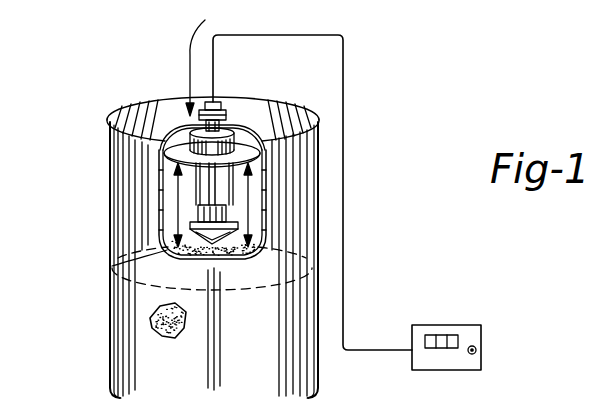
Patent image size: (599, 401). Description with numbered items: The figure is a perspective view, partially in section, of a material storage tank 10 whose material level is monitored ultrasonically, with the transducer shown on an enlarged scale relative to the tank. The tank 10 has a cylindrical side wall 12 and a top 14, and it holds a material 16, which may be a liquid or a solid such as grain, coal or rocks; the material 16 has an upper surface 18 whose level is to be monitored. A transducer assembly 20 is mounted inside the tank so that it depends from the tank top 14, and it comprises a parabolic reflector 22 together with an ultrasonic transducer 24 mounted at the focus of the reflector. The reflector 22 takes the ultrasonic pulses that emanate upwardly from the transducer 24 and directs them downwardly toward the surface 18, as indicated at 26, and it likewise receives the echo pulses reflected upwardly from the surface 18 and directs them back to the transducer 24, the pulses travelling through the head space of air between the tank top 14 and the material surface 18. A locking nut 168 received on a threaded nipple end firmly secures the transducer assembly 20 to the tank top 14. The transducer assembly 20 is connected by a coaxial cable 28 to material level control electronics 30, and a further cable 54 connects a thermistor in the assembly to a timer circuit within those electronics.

The material storage tank 10 is at (98, 222).
The cylindrical side wall 12 is at (112, 357).
The top 14 is at (147, 99).
The material 16 is at (148, 323).
The upper surface 18 is at (150, 280).
The transducer assembly 20 is at (208, 61).
The locking nut 168 is at (226, 112).
The parabolic reflector 22 is at (250, 150).
The ultrasonic transducer 24 is at (220, 201).
The ultrasonic pulses 26 is at (160, 197).
The coaxial cable 28 is at (343, 262).
The material level control electronics 30 is at (455, 326).
The cable 54 is at (510, 392).